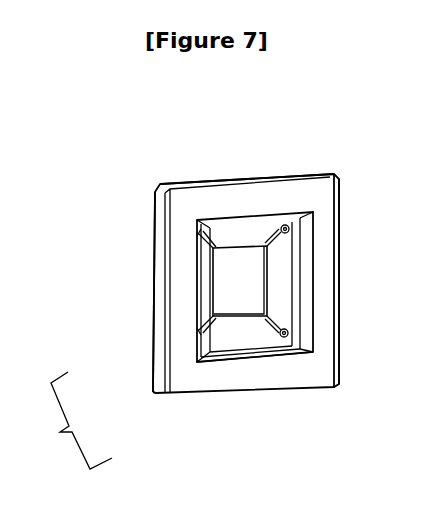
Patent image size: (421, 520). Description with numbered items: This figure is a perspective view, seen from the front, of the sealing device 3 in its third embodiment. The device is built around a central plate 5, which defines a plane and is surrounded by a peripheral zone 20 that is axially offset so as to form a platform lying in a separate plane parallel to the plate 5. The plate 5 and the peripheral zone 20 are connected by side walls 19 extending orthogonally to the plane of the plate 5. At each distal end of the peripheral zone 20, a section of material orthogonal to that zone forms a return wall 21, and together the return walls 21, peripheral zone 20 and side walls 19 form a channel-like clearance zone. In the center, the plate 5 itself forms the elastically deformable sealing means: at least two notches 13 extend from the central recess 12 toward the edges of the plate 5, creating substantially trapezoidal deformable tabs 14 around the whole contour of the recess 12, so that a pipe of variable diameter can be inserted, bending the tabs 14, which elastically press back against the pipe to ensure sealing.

The sealing device 3 is at (60, 432).
The plate 5 is at (203, 277).
The central recess 12 is at (258, 273).
The notch 13 is at (283, 350).
The deformable tab 14 is at (215, 345).
The side wall 19 is at (303, 290).
The peripheral zone 20 is at (238, 208).
The return wall 21 is at (287, 177).